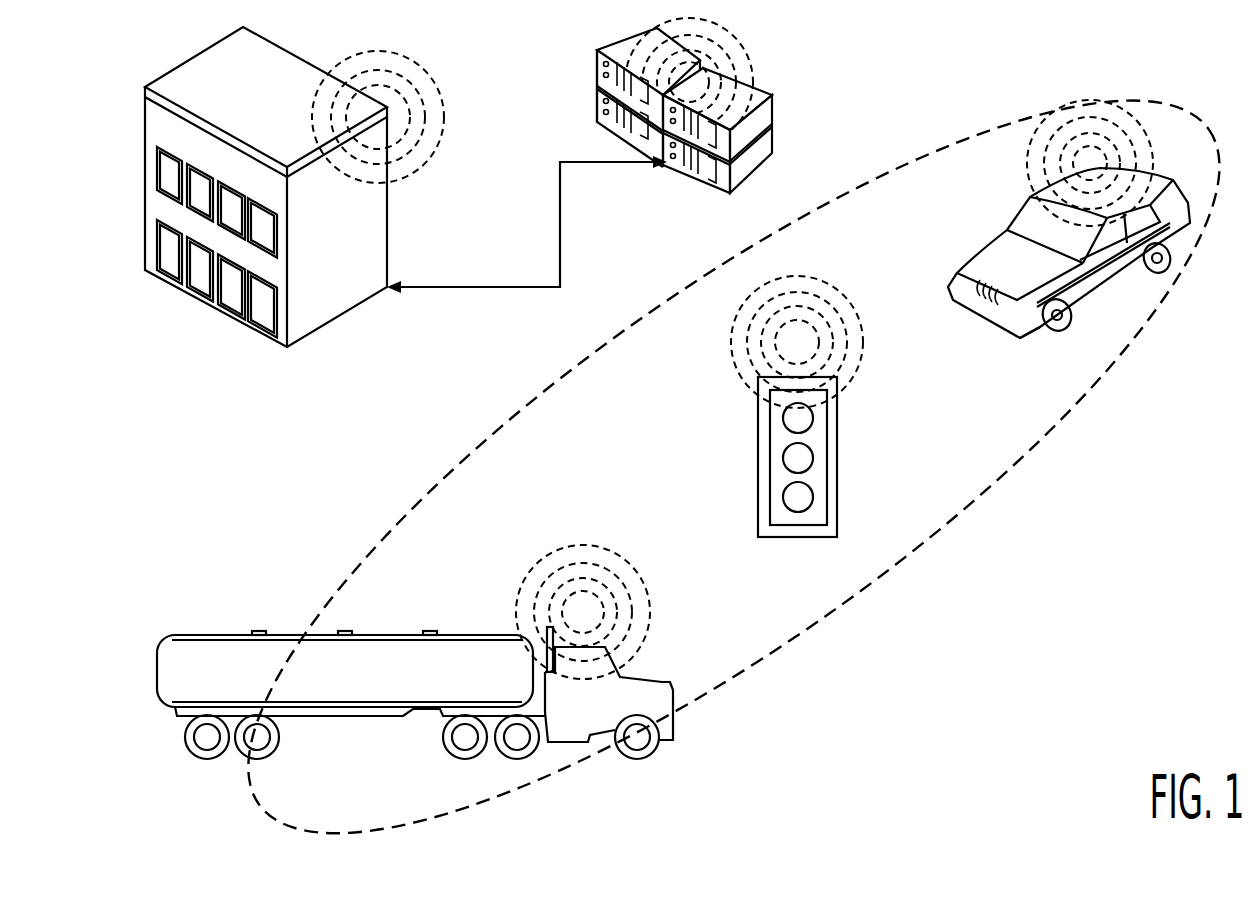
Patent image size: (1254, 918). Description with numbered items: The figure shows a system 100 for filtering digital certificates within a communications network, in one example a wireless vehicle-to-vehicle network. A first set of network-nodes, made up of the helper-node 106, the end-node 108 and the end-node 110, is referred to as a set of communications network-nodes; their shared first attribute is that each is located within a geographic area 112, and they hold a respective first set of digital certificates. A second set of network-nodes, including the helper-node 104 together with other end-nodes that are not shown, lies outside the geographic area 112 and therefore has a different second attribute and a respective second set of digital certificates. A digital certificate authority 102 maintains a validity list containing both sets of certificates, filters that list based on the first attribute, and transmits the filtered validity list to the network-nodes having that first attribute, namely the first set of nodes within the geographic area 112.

The system 100 is at (900, 88).
The digital certificate authority 102 is at (623, 48).
The helper-node 104 is at (143, 133).
The helper-node 106 is at (758, 465).
The end-node 108 is at (990, 237).
The end-node 110 is at (202, 635).
The geographic area 112 is at (997, 480).